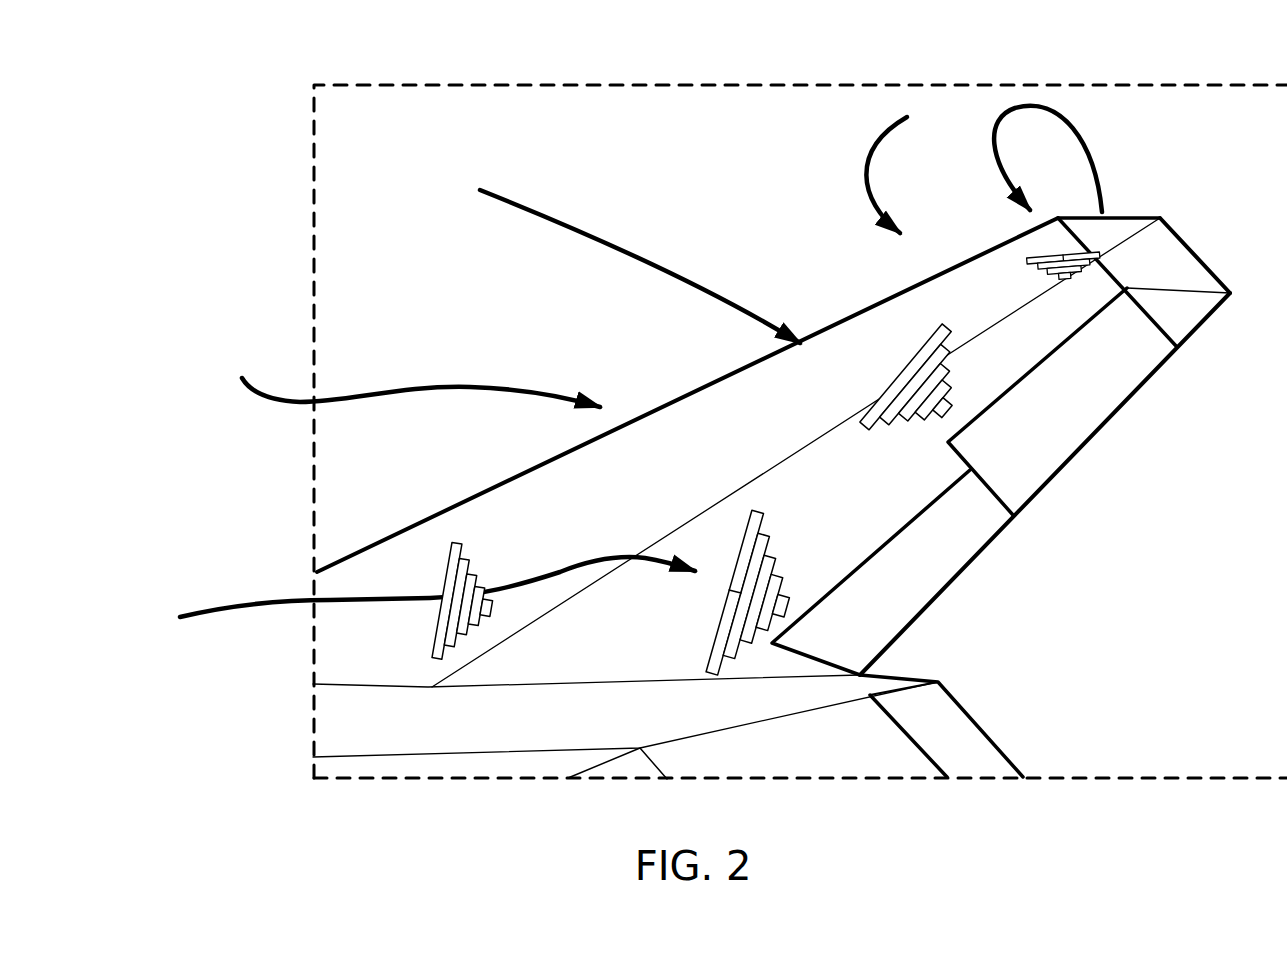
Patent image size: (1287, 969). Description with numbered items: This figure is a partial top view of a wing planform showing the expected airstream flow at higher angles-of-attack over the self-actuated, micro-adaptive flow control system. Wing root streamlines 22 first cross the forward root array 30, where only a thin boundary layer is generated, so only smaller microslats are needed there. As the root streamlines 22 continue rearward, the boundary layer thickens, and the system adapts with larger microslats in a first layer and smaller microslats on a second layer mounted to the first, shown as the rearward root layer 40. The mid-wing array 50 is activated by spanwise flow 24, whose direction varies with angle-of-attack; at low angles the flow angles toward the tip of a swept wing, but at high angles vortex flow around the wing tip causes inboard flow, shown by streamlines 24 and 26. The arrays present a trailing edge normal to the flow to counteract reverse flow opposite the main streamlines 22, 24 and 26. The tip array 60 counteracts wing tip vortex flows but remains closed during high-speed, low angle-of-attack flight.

The wing root streamlines 22 is at (362, 393).
The spanwise flow 24 is at (650, 253).
The streamlines 26 is at (883, 130).
The forward root array 30 is at (453, 548).
The rearward root layer 40 is at (795, 582).
The mid-wing array 50 is at (912, 362).
The tip array 60 is at (1077, 278).